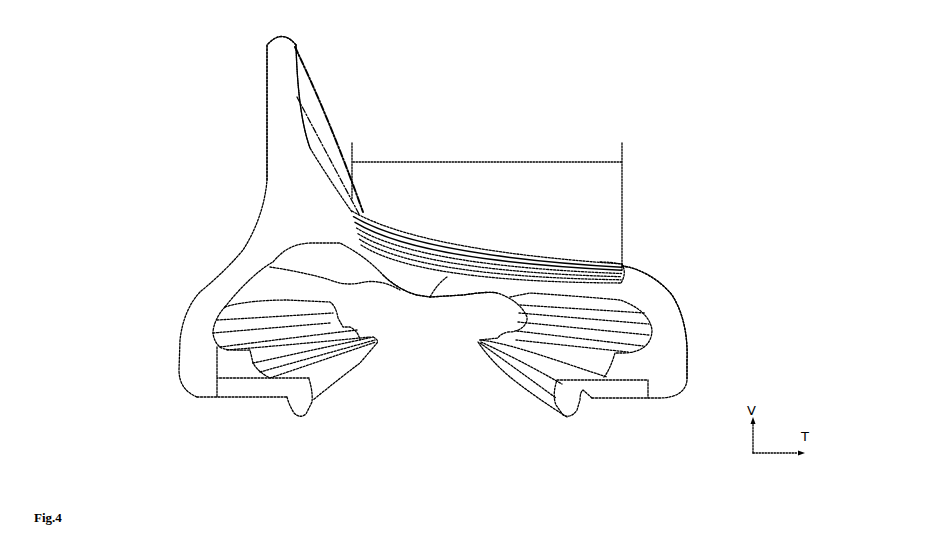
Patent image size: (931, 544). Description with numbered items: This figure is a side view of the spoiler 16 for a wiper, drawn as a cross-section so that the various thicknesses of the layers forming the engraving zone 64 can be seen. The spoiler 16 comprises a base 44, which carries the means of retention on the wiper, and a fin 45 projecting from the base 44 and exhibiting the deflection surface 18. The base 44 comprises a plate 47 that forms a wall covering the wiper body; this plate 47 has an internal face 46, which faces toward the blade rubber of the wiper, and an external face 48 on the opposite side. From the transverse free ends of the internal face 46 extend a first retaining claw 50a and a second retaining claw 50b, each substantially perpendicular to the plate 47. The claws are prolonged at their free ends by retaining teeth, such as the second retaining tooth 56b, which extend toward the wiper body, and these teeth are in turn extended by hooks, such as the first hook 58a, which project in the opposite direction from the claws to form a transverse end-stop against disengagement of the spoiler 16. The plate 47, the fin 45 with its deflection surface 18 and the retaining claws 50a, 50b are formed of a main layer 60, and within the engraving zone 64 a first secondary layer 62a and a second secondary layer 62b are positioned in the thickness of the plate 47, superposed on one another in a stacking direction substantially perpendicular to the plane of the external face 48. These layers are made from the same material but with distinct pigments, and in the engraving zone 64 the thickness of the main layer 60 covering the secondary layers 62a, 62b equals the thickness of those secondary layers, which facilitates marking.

The spoiler 16 is at (160, 143).
The fin 45 is at (273, 107).
The deflection surface 18 is at (322, 134).
The engraving zone 64 is at (488, 160).
The external face 48 is at (408, 233).
The first secondary layer 62a is at (457, 257).
The second secondary layer 62b is at (482, 260).
The main layer 60 is at (547, 254).
The plate 47 is at (600, 257).
The base 44 is at (665, 288).
The internal face 46 is at (430, 300).
The first retaining claw 50a is at (200, 320).
The second retaining claw 50b is at (663, 333).
The first hook 58a is at (317, 403).
The second retaining tooth 56b is at (587, 397).